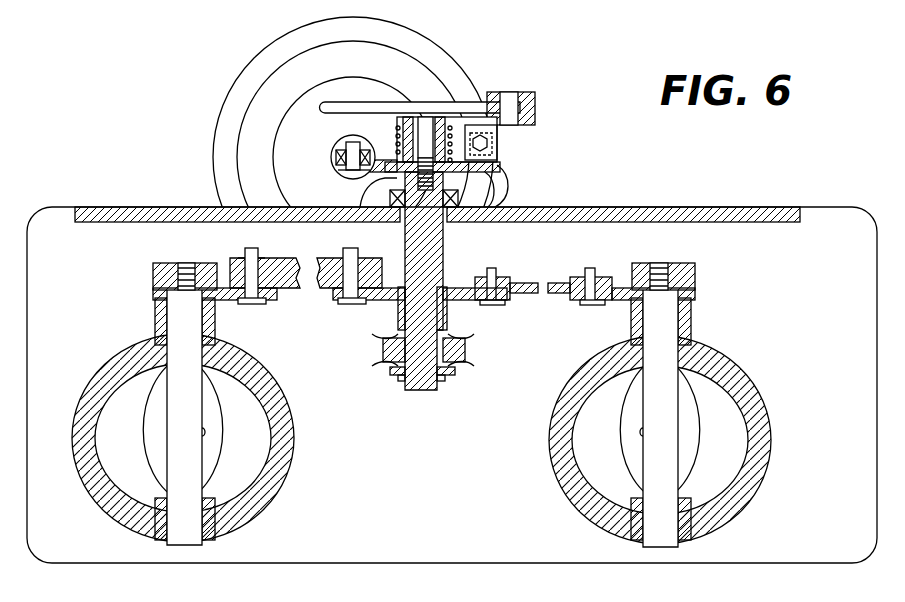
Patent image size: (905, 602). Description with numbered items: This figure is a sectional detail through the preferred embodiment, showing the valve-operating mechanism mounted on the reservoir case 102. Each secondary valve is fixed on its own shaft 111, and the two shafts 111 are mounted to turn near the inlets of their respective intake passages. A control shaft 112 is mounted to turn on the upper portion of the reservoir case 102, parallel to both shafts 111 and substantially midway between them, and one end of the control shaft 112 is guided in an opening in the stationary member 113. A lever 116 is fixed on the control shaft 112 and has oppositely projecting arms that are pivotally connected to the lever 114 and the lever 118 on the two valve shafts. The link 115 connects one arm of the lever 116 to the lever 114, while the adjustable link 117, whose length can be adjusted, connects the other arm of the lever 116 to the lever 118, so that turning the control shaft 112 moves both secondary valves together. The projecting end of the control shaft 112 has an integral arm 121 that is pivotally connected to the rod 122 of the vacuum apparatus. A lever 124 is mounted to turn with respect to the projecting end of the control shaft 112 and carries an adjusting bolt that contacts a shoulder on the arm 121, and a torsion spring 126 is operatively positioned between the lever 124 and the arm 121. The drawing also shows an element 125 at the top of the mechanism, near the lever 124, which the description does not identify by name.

The reservoir case 102 is at (678, 207).
The shaft 111 is at (185, 310).
The control shaft 112 is at (418, 390).
The stationary member 113 is at (465, 350).
The lever 114 is at (615, 300).
The link 115 is at (562, 280).
The lever 116 is at (455, 290).
The adjustable link 117 is at (238, 268).
The lever 118 is at (228, 300).
The arm 121 is at (392, 166).
The rod 122 is at (336, 158).
The lever 124 is at (511, 100).
The pin 125 is at (432, 118).
The torsion spring 126 is at (398, 120).